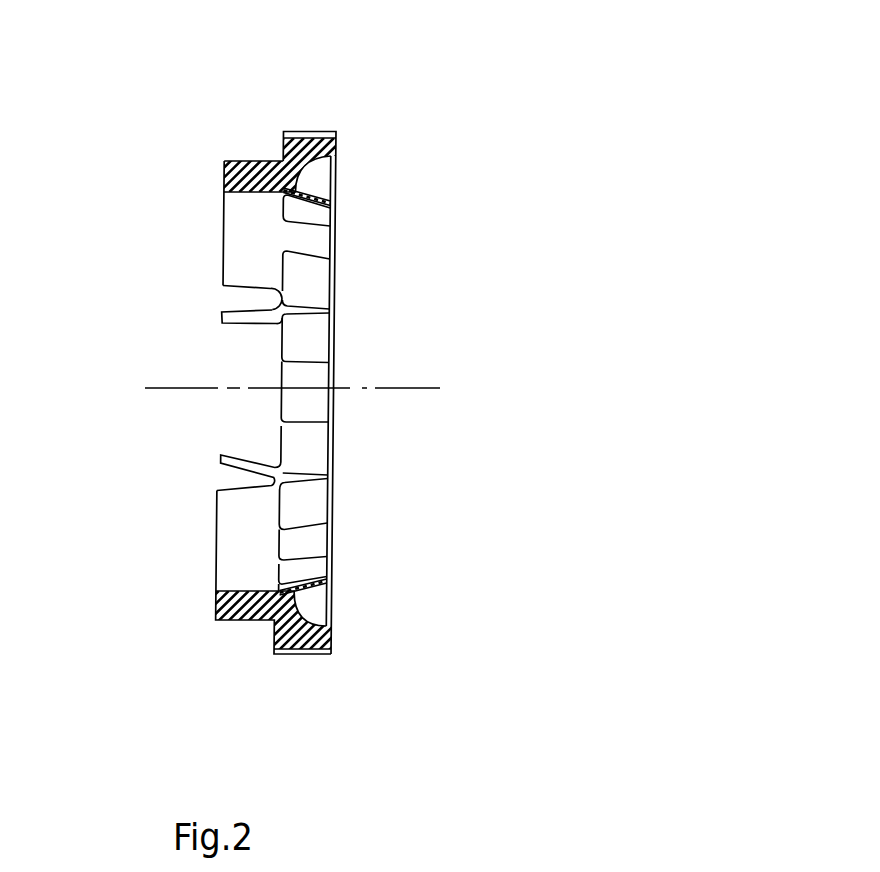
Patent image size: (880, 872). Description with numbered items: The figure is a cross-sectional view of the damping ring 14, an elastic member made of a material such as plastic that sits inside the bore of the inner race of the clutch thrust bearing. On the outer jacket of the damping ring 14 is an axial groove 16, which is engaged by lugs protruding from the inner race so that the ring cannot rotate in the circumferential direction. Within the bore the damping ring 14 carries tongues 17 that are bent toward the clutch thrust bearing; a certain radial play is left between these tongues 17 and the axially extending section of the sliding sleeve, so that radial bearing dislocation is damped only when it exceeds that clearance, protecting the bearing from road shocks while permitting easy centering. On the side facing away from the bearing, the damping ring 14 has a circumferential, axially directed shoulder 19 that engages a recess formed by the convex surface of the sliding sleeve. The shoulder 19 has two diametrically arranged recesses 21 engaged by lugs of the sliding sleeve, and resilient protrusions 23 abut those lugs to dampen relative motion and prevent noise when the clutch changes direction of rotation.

The damping ring 14 is at (262, 131).
The axial groove 16 is at (308, 134).
The tongues 17 is at (308, 243).
The shoulder 19 is at (232, 621).
The recesses 21 is at (240, 297).
The resilient protrusions 23 is at (237, 319).